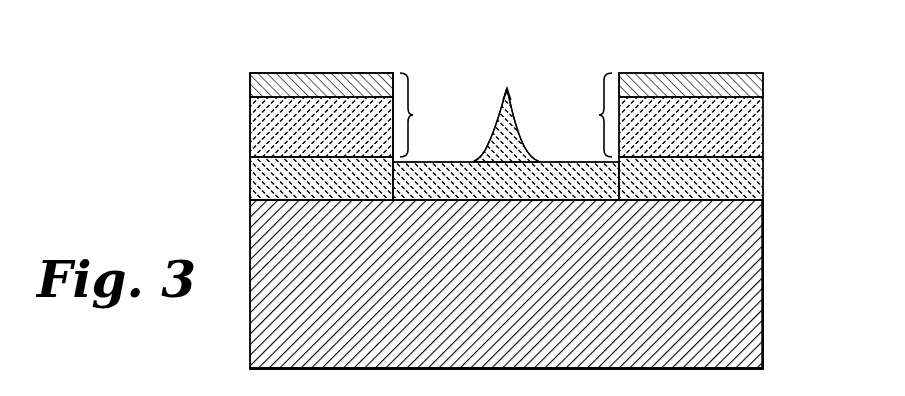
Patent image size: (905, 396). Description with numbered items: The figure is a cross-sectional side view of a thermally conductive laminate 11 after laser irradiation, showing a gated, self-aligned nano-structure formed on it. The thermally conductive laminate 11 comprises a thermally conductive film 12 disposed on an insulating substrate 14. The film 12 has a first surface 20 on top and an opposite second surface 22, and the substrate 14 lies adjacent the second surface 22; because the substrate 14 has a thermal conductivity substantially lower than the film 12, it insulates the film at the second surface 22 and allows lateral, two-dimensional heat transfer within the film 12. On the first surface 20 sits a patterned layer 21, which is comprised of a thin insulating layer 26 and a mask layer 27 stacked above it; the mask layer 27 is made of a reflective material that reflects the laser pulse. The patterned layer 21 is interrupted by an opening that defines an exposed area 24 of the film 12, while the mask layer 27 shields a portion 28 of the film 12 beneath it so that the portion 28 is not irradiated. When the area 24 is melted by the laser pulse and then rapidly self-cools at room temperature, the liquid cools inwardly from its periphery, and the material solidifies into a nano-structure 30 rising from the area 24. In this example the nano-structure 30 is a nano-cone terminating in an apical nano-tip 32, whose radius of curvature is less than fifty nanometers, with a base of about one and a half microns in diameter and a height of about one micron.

The thermally conductive laminate 11 is at (249, 143).
The thermally conductive film 12 is at (249, 178).
The insulating substrate 14 is at (518, 292).
The first surface 20 is at (745, 157).
The patterned layer 21 is at (506, 115).
The second surface 22 is at (744, 202).
The area 24 is at (518, 190).
The thin insulating layer 26 is at (334, 134).
The mask layer 27 is at (249, 88).
The portion 28 is at (334, 188).
The nano-structure 30 is at (487, 146).
The apical nano-tip 32 is at (508, 88).